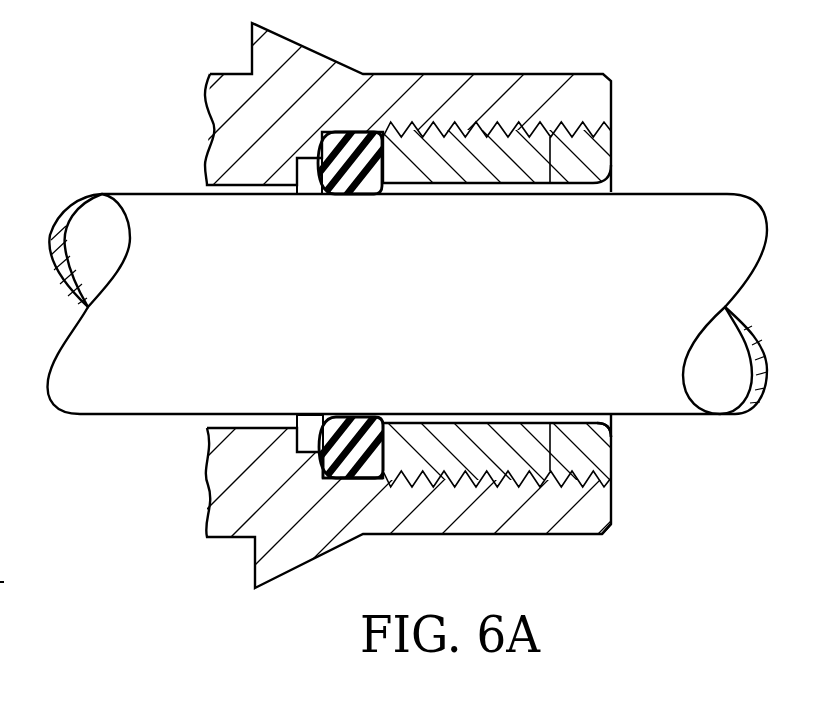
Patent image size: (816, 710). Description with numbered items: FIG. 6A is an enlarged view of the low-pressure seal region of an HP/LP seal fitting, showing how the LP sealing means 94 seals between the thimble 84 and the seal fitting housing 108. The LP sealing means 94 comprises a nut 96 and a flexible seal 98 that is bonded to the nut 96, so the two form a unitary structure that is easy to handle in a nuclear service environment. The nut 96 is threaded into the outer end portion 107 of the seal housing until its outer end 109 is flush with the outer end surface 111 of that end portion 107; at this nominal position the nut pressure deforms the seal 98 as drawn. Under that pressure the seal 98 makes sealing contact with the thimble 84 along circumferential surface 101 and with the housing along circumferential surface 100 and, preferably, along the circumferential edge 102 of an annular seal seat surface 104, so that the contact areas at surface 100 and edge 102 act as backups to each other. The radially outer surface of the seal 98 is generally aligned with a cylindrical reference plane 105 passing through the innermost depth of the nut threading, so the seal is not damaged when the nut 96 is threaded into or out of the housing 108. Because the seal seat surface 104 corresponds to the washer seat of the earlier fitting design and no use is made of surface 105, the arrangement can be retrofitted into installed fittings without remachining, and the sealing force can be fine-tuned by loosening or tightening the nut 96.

The piston rod 84 is at (243, 190).
The LP sealing means 94 is at (789, 462).
The nut 96 is at (552, 438).
The flexible seal 98 is at (333, 478).
The circumferential surface 100 is at (358, 481).
The circumferential surface 101 is at (343, 417).
The circumferential edge 102 is at (318, 413).
The annular seal seat surface 104 is at (325, 472).
The cylindrical reference plane 105 is at (294, 166).
The outer end portion 107 is at (433, 87).
The seal fitting housing 108 is at (467, 525).
The outer end 109 is at (613, 428).
The housing chamfer 111 is at (613, 517).